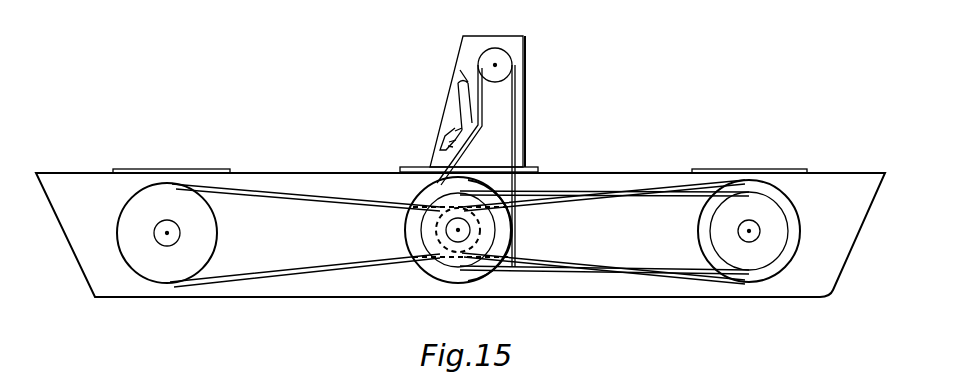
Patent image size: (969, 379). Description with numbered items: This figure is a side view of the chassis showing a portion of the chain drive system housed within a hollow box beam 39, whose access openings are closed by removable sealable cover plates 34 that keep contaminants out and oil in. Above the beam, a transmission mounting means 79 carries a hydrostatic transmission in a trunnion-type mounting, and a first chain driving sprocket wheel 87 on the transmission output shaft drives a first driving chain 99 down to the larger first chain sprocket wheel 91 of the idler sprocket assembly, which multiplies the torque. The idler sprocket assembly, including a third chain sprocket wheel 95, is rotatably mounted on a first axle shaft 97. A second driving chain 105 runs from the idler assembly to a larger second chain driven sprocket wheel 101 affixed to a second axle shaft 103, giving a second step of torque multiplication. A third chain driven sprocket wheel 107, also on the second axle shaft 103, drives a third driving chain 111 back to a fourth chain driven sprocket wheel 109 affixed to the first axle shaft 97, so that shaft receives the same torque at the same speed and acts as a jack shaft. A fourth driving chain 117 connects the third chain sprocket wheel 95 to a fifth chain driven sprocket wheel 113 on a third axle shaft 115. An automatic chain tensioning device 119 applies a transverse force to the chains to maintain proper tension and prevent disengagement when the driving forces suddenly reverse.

The removable sealable cover plate 34 is at (175, 170).
The hollow box beam 39 is at (128, 278).
The transmission mounting means 79 is at (524, 72).
The first chain driving sprocket wheel 87 is at (499, 58).
The first chain sprocket wheel 91 is at (503, 237).
The third chain sprocket wheel 95 is at (437, 237).
The first axle shaft 97 is at (460, 243).
The first driving chain 99 is at (513, 120).
The second chain driven sprocket wheel 101 is at (768, 190).
The second axle shaft 103 is at (760, 230).
The second driving chain 105 is at (604, 207).
The third chain driven sprocket wheel 107 is at (767, 258).
The fourth chain driven sprocket wheel 109 is at (442, 270).
The third driving chain 111 is at (568, 193).
The fifth chain driven sprocket wheel 113 is at (157, 197).
The third axle shaft 115 is at (168, 247).
The fourth driving chain 117 is at (283, 190).
The automatic chain tensioning device 119 is at (452, 113).